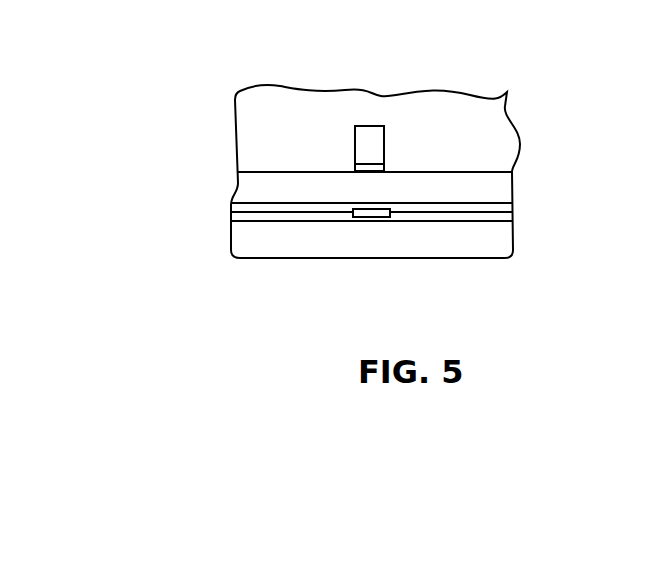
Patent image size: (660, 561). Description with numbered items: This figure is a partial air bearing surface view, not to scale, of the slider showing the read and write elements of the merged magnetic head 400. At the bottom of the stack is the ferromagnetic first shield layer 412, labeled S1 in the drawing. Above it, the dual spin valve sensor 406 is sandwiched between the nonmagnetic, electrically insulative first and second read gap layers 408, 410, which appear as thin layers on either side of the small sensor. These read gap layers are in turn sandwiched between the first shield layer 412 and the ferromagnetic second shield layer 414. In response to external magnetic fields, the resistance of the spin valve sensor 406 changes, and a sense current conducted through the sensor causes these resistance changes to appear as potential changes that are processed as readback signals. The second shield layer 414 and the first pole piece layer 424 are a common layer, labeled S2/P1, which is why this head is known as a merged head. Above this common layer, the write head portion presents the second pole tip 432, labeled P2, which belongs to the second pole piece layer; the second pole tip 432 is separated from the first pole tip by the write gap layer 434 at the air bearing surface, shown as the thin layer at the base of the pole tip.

The merged magnetic head 400 is at (537, 102).
The dual spin valve sensor 406 is at (376, 218).
The first read gap layer 408 is at (289, 222).
The second read gap layer 410 is at (478, 208).
The first shield layer 412 is at (500, 243).
The second shield layer 414 is at (372, 187).
The first pole piece layer 424 is at (237, 192).
The second pole tip 432 is at (370, 142).
The write gap layer 434 is at (373, 164).
The second pole P2 is at (378, 148).